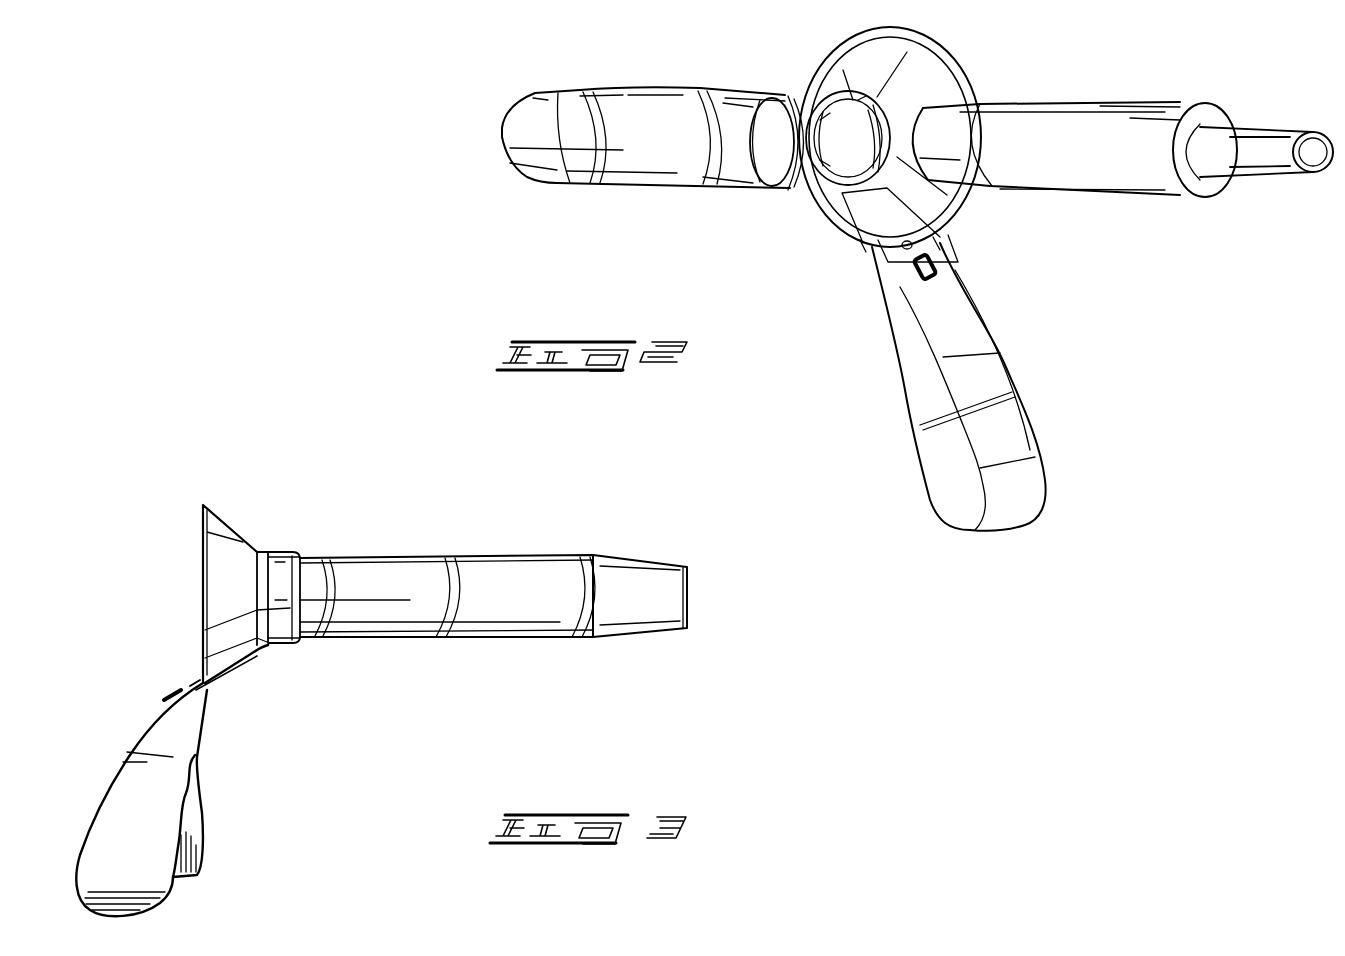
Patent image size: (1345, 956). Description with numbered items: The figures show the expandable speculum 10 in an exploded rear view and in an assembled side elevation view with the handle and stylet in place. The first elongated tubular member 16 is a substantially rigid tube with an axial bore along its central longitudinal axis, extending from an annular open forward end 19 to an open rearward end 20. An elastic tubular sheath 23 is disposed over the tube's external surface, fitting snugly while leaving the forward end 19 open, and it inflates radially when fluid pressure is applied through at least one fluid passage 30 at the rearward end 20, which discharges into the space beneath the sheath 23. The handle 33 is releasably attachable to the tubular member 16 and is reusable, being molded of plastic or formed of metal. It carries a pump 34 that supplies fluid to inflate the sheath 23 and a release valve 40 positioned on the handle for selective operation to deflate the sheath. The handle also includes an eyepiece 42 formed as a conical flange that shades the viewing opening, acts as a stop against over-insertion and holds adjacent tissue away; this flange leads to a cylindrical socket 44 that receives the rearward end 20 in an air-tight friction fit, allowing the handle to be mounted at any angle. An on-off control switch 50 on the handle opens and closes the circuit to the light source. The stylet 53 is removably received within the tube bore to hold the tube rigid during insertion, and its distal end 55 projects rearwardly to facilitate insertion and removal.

In FIG. 2, the expandable speculum 10 is at (1012, 54).
In FIG. 3, the expandable speculum 10 is at (410, 519).
In FIG. 2, the first elongated tubular member 16 is at (662, 200).
In FIG. 3, the first elongated tubular member 16 is at (462, 538).
In FIG. 2, the forward end 19 is at (503, 135).
In FIG. 3, the forward end 19 is at (692, 597).
In FIG. 2, the rearward end 20 is at (787, 186).
In FIG. 2, the elastic tubular sheath 23 is at (652, 92).
In FIG. 3, the elastic tubular sheath 23 is at (508, 625).
In FIG. 2, the fluid passage 30 is at (757, 170).
In FIG. 2, the handle 33 is at (1007, 330).
In FIG. 3, the handle 33 is at (210, 718).
In FIG. 3, the pump 34 is at (204, 817).
In FIG. 2, the release valve 40 is at (886, 268).
In FIG. 3, the release valve 40 is at (190, 680).
In FIG. 2, the eyepiece 42 is at (940, 52).
In FIG. 3, the eyepiece 42 is at (228, 522).
In FIG. 2, the cylindrical socket 44 is at (870, 127).
In FIG. 3, the cylindrical socket 44 is at (290, 548).
In FIG. 2, the on-off control switch 50 is at (940, 265).
In FIG. 3, the on-off control switch 50 is at (160, 688).
In FIG. 2, the stylet 53 is at (1106, 88).
In FIG. 2, the distal end 55 is at (1256, 130).